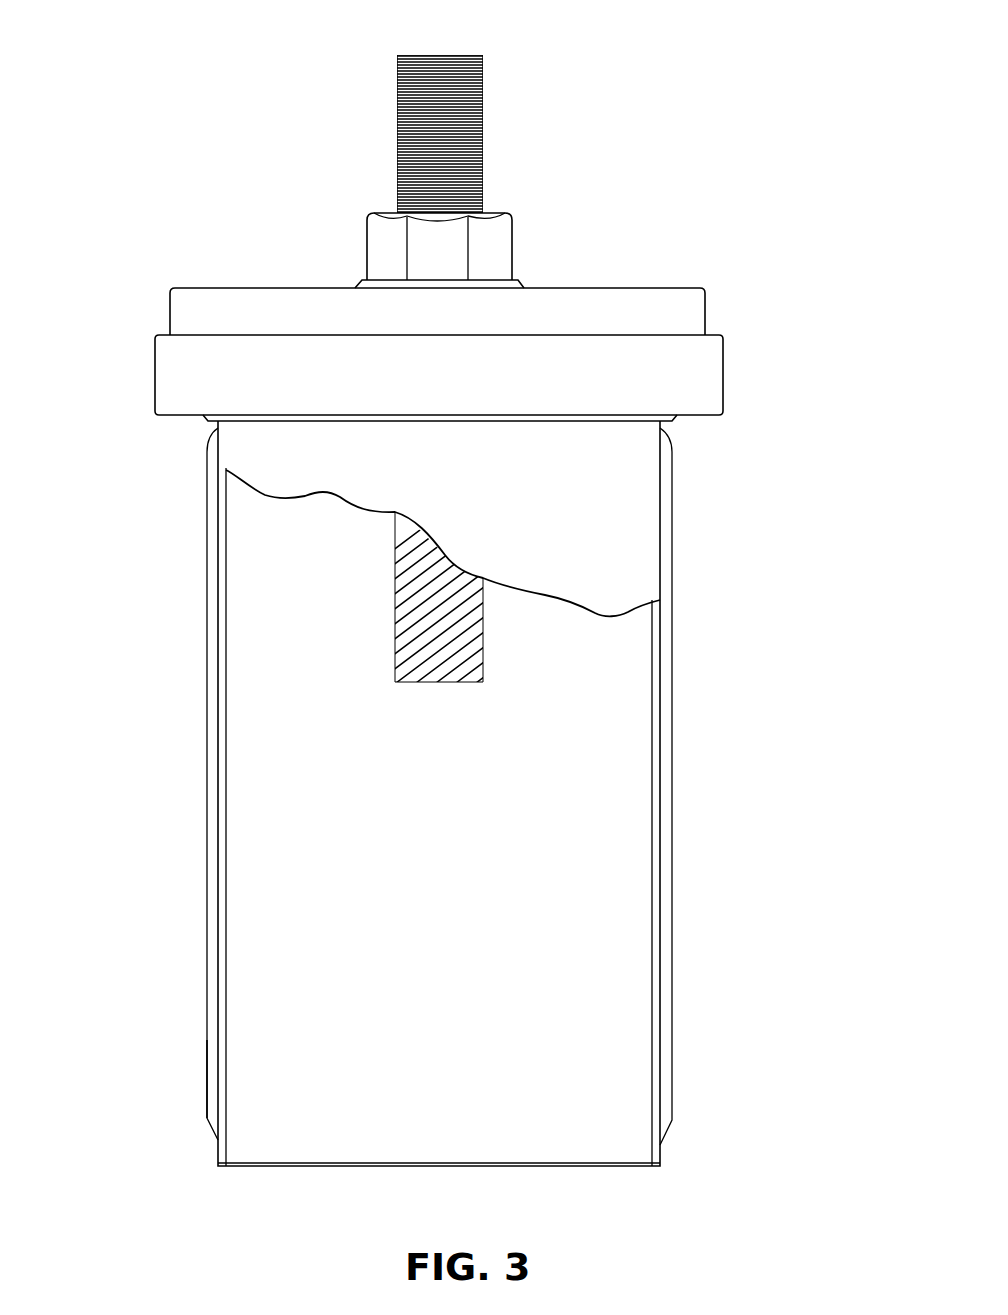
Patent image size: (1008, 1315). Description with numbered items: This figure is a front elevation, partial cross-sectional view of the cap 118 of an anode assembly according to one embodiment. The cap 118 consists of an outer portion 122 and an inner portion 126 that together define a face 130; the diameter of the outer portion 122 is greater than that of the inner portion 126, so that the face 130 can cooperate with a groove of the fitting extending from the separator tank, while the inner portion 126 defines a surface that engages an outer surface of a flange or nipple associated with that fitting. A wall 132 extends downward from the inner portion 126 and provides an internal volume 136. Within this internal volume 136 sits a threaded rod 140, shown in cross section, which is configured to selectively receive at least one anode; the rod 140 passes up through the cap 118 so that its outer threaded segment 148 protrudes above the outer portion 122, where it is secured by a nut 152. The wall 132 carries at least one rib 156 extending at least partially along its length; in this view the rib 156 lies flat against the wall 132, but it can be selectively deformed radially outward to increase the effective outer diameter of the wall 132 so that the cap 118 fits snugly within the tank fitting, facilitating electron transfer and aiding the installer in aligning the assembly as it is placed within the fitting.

The cap 118 is at (205, 105).
The outer threaded segment 148 is at (415, 133).
The nut 152 is at (489, 242).
The outer portion 122 is at (645, 315).
The face 130 is at (718, 335).
The inner portion 126 is at (697, 385).
The wall 132 is at (572, 520).
The rod 140 is at (410, 645).
The internal volume 136 is at (470, 917).
The rib 156 is at (207, 1072).